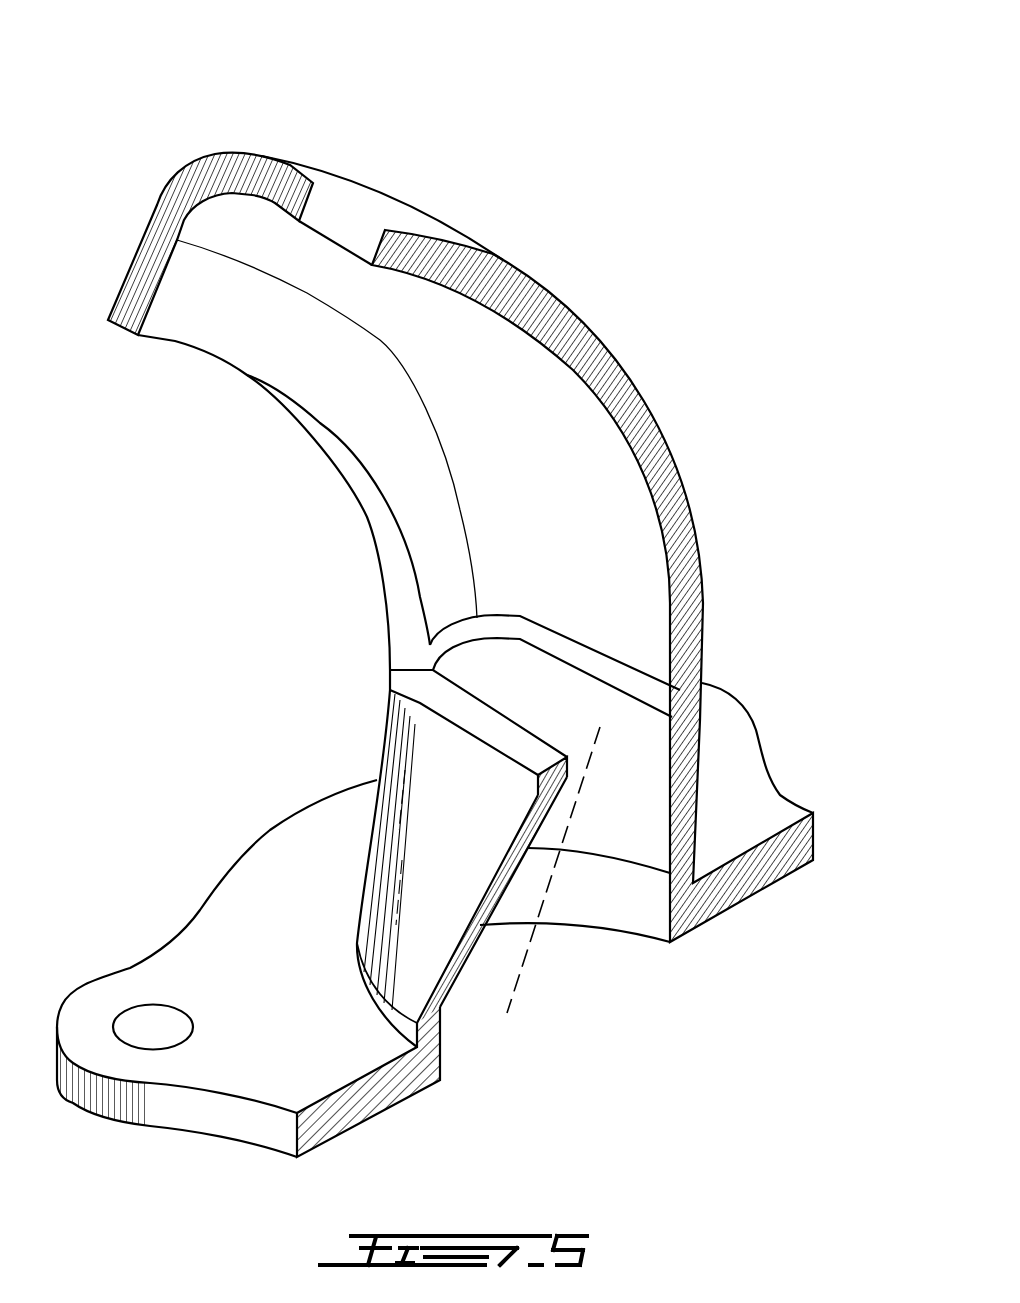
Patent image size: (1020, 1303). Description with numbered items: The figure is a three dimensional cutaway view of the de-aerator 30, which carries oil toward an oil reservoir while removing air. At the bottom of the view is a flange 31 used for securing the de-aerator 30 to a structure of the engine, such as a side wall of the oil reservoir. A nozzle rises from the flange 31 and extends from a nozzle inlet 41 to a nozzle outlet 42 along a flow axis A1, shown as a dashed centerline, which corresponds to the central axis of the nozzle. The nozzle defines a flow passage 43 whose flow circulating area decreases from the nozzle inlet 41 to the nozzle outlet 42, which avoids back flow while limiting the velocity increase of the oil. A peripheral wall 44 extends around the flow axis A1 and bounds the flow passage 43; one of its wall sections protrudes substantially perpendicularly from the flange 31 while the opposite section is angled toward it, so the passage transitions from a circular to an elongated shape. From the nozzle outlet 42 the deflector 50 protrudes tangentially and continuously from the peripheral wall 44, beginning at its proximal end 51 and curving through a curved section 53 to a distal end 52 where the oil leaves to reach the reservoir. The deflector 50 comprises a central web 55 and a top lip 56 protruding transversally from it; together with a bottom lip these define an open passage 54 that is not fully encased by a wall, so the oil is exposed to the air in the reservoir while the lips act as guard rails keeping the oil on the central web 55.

The de-aerator 30 is at (638, 173).
The deflector 50 is at (692, 353).
The curved section 53 is at (643, 432).
The top lip 56 is at (150, 257).
The distal end 52 is at (287, 168).
The central web 55 is at (352, 236).
The open passage 54 is at (447, 417).
The nozzle outlet 42 is at (590, 690).
The proximal end 51 is at (555, 666).
The flow passage 43 is at (630, 792).
The peripheral wall 44 is at (477, 927).
The flange 31 is at (217, 935).
The nozzle inlet 41 is at (547, 977).
The flow axis A1 is at (547, 897).